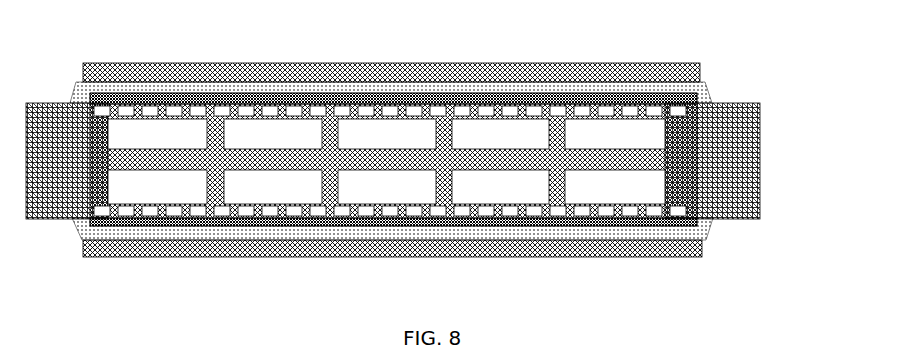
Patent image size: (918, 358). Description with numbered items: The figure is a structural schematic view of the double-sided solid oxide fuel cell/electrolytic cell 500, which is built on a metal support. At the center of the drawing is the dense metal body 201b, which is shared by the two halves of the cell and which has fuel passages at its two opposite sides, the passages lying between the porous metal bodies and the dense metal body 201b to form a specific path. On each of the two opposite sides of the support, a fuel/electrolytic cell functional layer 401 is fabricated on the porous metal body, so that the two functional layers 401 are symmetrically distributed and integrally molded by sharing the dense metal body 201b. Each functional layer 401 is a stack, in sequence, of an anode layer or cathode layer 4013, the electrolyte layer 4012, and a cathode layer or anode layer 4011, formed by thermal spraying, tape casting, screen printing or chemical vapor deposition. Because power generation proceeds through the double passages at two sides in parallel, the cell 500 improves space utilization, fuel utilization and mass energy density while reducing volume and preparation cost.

The double-sided solid oxide fuel cell/electrolytic cell 500 is at (378, 26).
The fuel/electrolytic cell functional layer 401 is at (432, 157).
The cathode layer or anode layer 4011 is at (434, 63).
The electrolyte layer 4012 is at (503, 90).
The anode layer or cathode layer 4013 is at (603, 98).
The dense metal body 201b is at (760, 158).